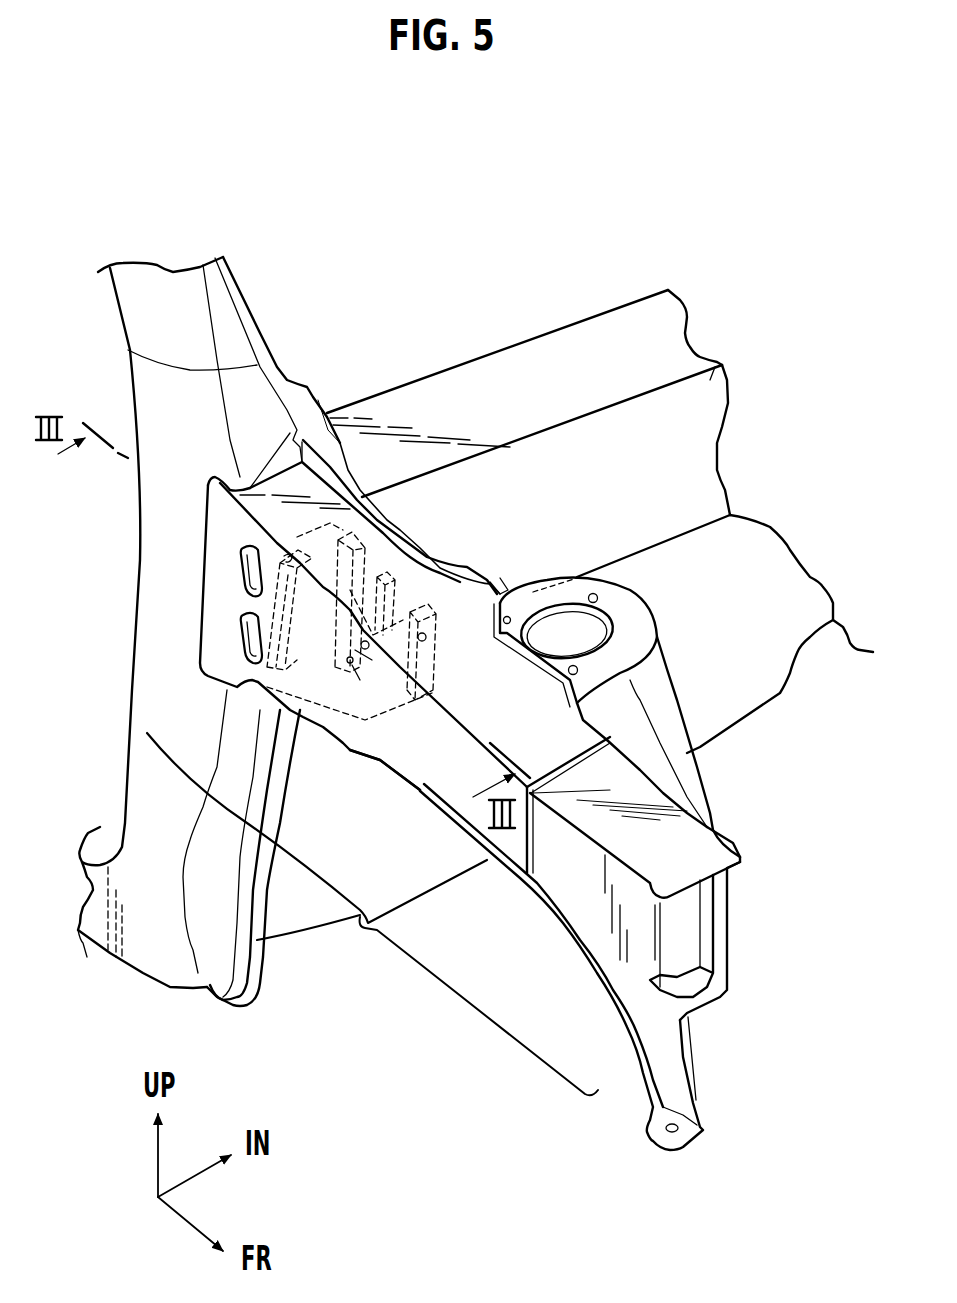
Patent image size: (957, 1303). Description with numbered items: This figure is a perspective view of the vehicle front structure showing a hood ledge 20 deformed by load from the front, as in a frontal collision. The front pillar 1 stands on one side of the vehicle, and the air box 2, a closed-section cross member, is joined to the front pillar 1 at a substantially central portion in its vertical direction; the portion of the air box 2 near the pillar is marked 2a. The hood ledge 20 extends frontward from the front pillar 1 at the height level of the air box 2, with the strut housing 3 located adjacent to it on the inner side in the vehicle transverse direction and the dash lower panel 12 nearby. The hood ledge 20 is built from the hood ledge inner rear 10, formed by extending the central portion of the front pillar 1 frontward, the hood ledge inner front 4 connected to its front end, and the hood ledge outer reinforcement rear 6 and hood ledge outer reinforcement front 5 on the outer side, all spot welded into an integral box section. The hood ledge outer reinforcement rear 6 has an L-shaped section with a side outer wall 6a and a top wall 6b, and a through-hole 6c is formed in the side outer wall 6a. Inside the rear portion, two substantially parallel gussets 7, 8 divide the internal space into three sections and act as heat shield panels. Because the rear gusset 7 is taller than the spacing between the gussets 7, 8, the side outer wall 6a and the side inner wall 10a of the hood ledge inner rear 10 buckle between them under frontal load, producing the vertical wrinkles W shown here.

The front pillar 1 is at (265, 328).
The air box 2 is at (477, 355).
The rear end portion of apron upper member 2a is at (707, 358).
The strut housing 3 is at (671, 654).
The hood ledge inner front 4 is at (594, 980).
The hood ledge outer reinforcement front 5 is at (736, 835).
The hood ledge outer reinforcement rear 6 is at (346, 760).
The side outer wall 6a is at (382, 755).
The top wall 6b is at (563, 750).
The through-hole 6c is at (240, 633).
The rear gusset 7 is at (378, 557).
The gusset 8 is at (463, 572).
The hood ledge inner rear 10 is at (491, 567).
The side inner wall 10a is at (502, 578).
The dash lower panel 12 is at (777, 657).
The hood ledge 20 is at (367, 923).
The wrinkles W is at (425, 538).